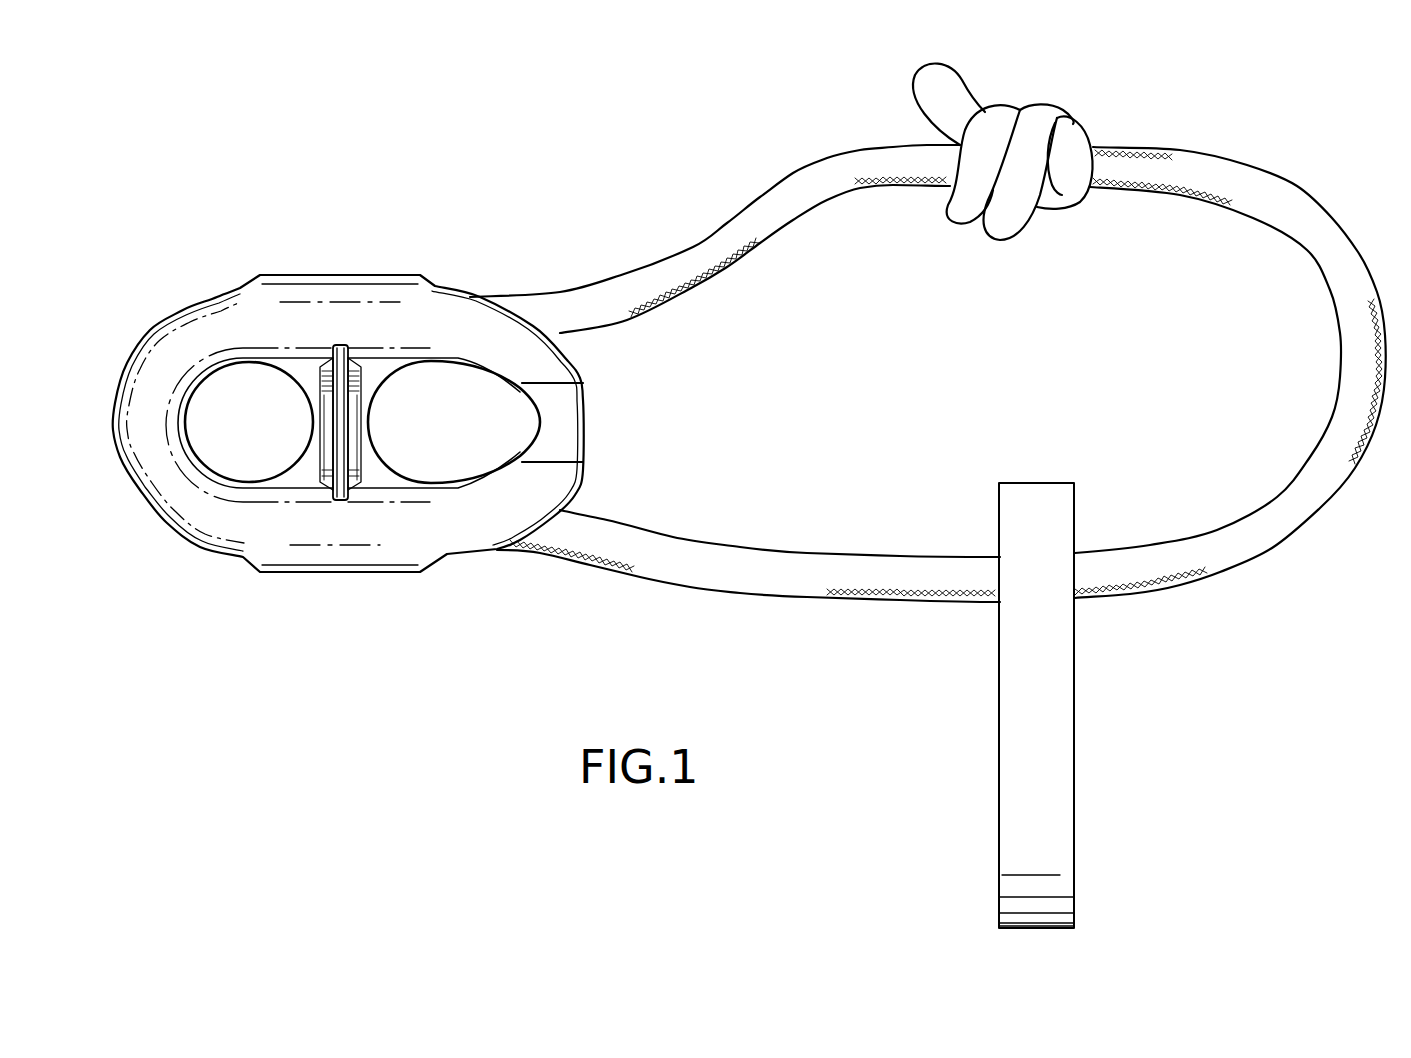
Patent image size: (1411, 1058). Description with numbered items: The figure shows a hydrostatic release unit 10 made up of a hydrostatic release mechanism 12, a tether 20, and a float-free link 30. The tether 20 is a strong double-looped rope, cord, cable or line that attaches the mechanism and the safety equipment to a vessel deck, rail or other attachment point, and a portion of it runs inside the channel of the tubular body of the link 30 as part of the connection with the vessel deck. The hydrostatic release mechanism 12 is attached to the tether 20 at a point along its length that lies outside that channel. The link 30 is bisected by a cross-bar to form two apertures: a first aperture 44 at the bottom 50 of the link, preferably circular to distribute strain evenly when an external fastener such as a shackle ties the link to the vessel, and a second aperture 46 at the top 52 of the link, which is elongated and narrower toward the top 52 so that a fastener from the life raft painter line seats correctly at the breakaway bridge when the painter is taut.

The hydrostatic release unit 10 is at (1268, 645).
The hydrostatic release mechanism 12 is at (1015, 891).
The tether 20 is at (1297, 198).
The float-free link 30 is at (298, 222).
The first aperture 44 is at (230, 390).
The second aperture 46 is at (443, 402).
The bottom 50 is at (150, 510).
The top 52 is at (590, 438).